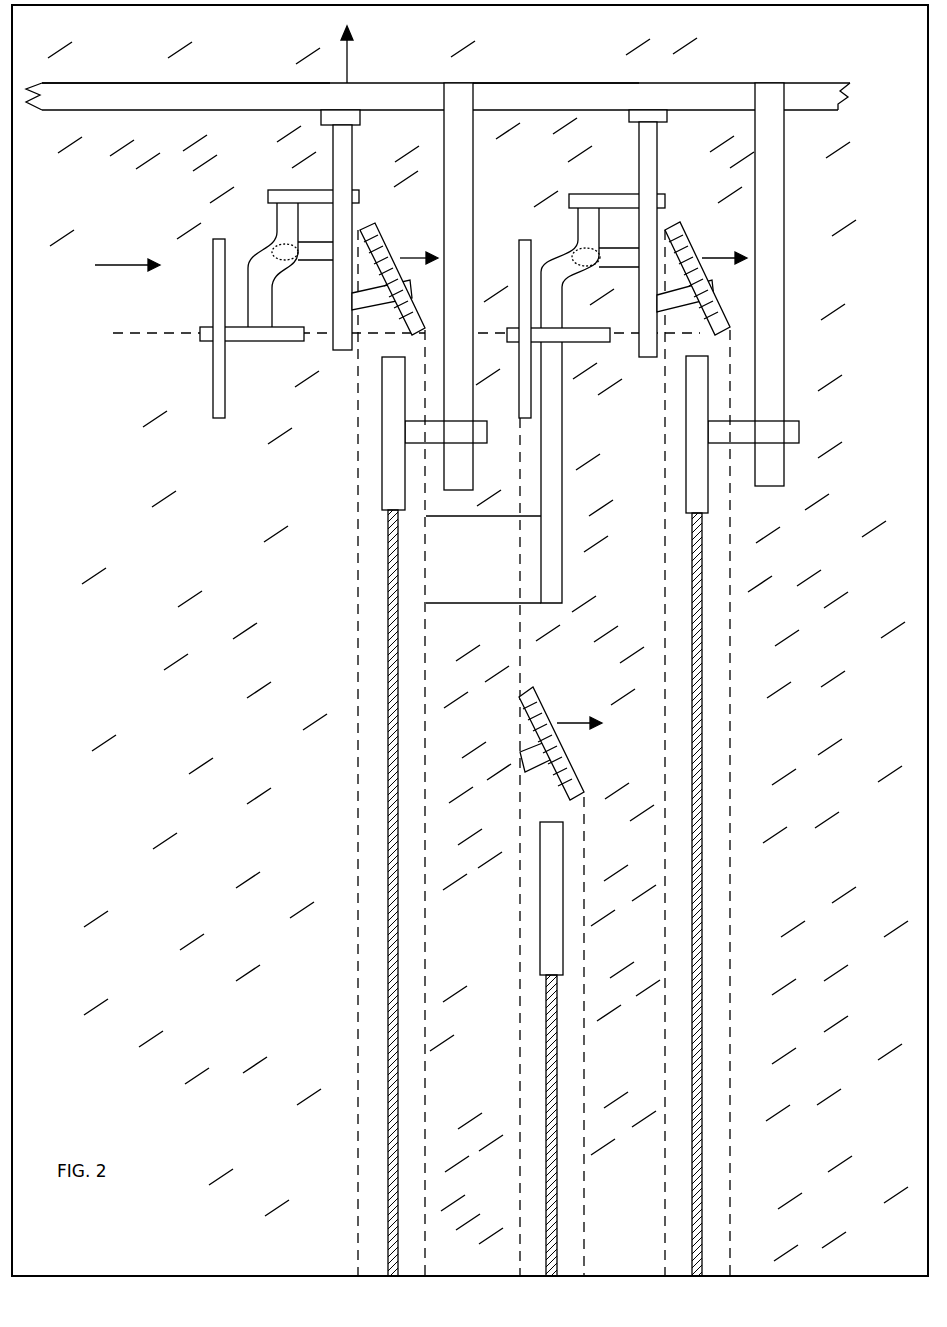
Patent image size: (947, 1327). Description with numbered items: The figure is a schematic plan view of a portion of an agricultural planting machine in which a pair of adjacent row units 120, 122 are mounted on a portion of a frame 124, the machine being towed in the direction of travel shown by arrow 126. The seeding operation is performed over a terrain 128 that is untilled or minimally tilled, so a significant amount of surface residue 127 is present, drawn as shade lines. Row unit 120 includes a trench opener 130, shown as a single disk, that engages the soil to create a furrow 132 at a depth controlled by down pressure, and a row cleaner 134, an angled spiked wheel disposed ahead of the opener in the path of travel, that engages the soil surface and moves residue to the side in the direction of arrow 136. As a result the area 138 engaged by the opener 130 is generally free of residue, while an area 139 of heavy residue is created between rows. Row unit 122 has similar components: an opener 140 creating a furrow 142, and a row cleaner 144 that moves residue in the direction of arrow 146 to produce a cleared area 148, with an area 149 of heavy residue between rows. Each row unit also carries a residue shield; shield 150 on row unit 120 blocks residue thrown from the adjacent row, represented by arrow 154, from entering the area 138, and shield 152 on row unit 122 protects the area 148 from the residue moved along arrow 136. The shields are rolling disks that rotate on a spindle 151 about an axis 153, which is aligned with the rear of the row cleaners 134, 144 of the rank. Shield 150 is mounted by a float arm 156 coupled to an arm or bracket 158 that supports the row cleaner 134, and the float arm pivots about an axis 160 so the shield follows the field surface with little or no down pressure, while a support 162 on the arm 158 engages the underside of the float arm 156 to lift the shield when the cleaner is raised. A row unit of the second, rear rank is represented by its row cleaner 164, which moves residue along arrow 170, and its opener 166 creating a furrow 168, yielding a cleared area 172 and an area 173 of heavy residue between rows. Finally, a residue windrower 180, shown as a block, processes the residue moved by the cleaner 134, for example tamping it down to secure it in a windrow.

The row unit 120 is at (236, 69).
The row unit 122 is at (744, 60).
The frame 124 is at (163, 92).
The direction of travel arrow 126 is at (350, 62).
The shade lines / residue 127 is at (628, 56).
The terrain 128 is at (478, 649).
The trench opener 130 is at (381, 447).
The furrow 132 is at (389, 587).
The row cleaner 134 is at (366, 227).
The residue movement arrow 136 is at (400, 258).
The area free of residue 138 is at (370, 481).
The area of heavy residue 139 is at (449, 803).
The opener 140 is at (697, 469).
The furrow 142 is at (691, 594).
The row cleaner 144 is at (684, 236).
The residue movement arrow 146 is at (712, 258).
The area free of residue 148 is at (672, 394).
The area of heavy residue 149 is at (752, 803).
The residue shield 150 is at (213, 273).
The spindle 151 is at (240, 341).
The residue shield 152 is at (523, 262).
The axis 153 is at (113, 334).
The adjacent-row residue arrow 154 is at (113, 262).
The float arm 156 is at (273, 250).
The arm or bracket 158 is at (352, 153).
The pivot axis 160 is at (252, 195).
The support 162 is at (307, 253).
The row cleaner 164 is at (519, 697).
The opener 166 is at (548, 877).
The furrow 168 is at (549, 1045).
The residue movement arrow 170 is at (558, 723).
The area free of residue 172 is at (528, 947).
The area of heavy residue 173 is at (607, 1036).
The residue windrower 180 is at (532, 405).